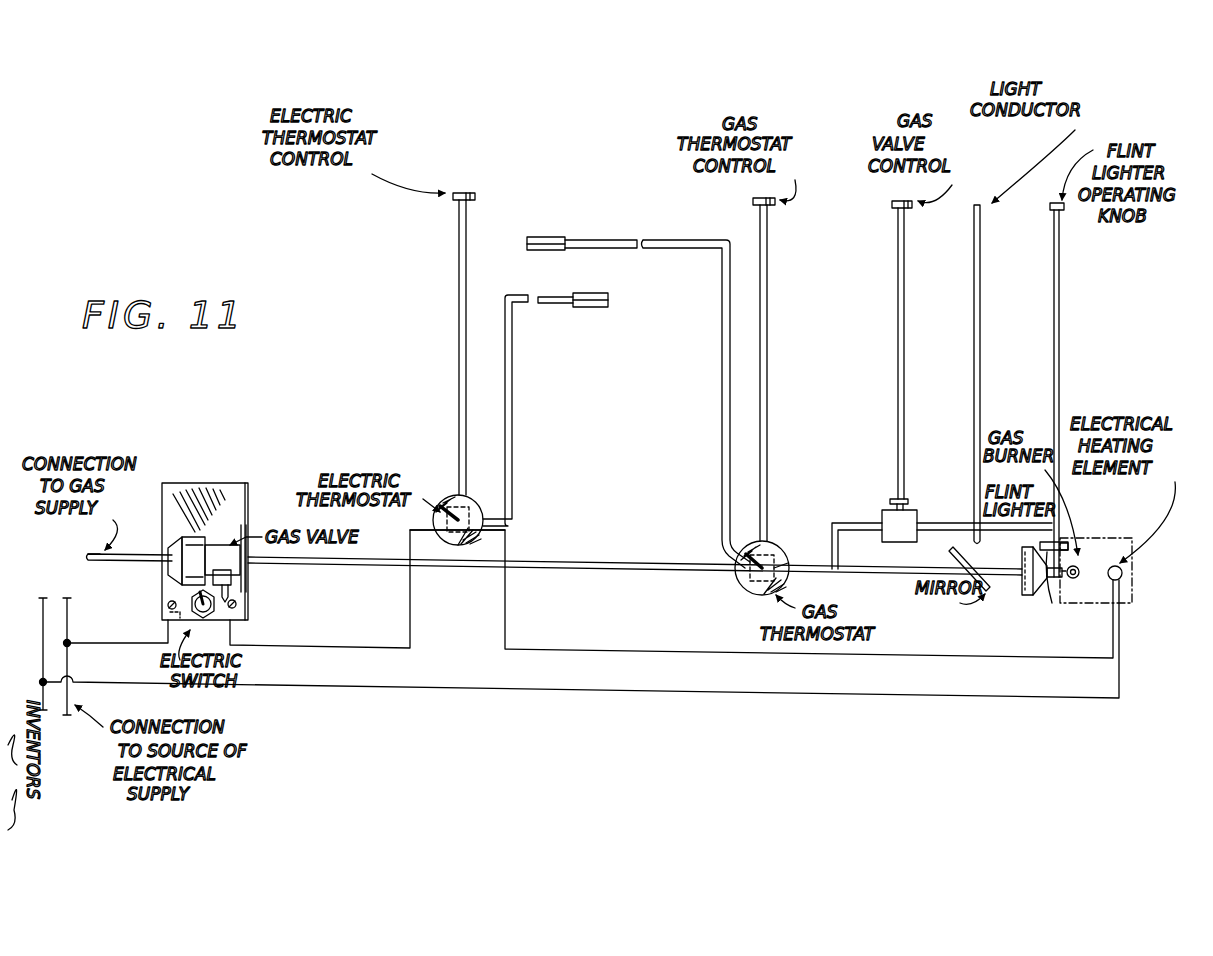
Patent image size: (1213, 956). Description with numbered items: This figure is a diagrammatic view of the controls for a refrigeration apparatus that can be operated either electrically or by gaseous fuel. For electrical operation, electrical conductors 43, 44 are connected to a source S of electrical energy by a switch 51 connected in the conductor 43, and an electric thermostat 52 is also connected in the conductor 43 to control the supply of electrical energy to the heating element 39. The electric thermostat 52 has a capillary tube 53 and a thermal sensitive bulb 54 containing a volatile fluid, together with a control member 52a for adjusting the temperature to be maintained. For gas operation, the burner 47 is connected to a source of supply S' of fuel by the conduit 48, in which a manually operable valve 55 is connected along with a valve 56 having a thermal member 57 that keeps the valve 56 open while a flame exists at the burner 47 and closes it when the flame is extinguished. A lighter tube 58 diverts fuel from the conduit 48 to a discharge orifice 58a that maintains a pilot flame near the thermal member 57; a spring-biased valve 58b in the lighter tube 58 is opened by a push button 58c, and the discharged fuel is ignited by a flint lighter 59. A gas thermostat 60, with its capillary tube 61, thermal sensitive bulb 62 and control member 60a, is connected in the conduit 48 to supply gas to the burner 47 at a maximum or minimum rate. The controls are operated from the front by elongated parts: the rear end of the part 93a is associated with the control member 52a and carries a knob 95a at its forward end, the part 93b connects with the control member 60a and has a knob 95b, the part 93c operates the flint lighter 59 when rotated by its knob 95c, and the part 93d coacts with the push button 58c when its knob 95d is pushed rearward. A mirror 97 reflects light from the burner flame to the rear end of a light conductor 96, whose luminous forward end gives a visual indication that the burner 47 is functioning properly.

The source of electrical energy S is at (40, 656).
The source of supply of fuel S' is at (118, 571).
The heating element 39 is at (1122, 578).
The electrical conductor 43 is at (1006, 662).
The electrical conductor 44 is at (1006, 702).
The burner 47 is at (1072, 579).
The conduit 48 is at (657, 570).
The switch 51 is at (215, 606).
The electric thermostat 52 is at (480, 505).
The control member 52a is at (445, 540).
The capillary tube 53 is at (512, 402).
The thermal sensitive bulb 54 is at (588, 312).
The manually operable valve 55 is at (248, 578).
The valve 56 is at (1024, 597).
The thermal member 57 is at (1036, 600).
The lighter tube 58 is at (956, 530).
The discharge orifice 58a is at (1071, 588).
The valve 58b is at (895, 546).
The push button 58c is at (889, 500).
The flint lighter 59 is at (1040, 545).
The gas thermostat 60 is at (737, 582).
The control member 60a is at (780, 552).
The capillary tube 61 is at (722, 393).
The thermal sensitive bulb 62 is at (563, 240).
The elongated part 93a is at (459, 333).
The elongated part 93b is at (770, 386).
The elongated part 93c is at (1054, 361).
The elongated part 93d is at (898, 357).
The knob 95a is at (508, 180).
The knob 95b is at (752, 202).
The knob 95c is at (1052, 209).
The knob 95d is at (892, 206).
The light conductor 96 is at (974, 294).
The mirror 97 is at (953, 551).